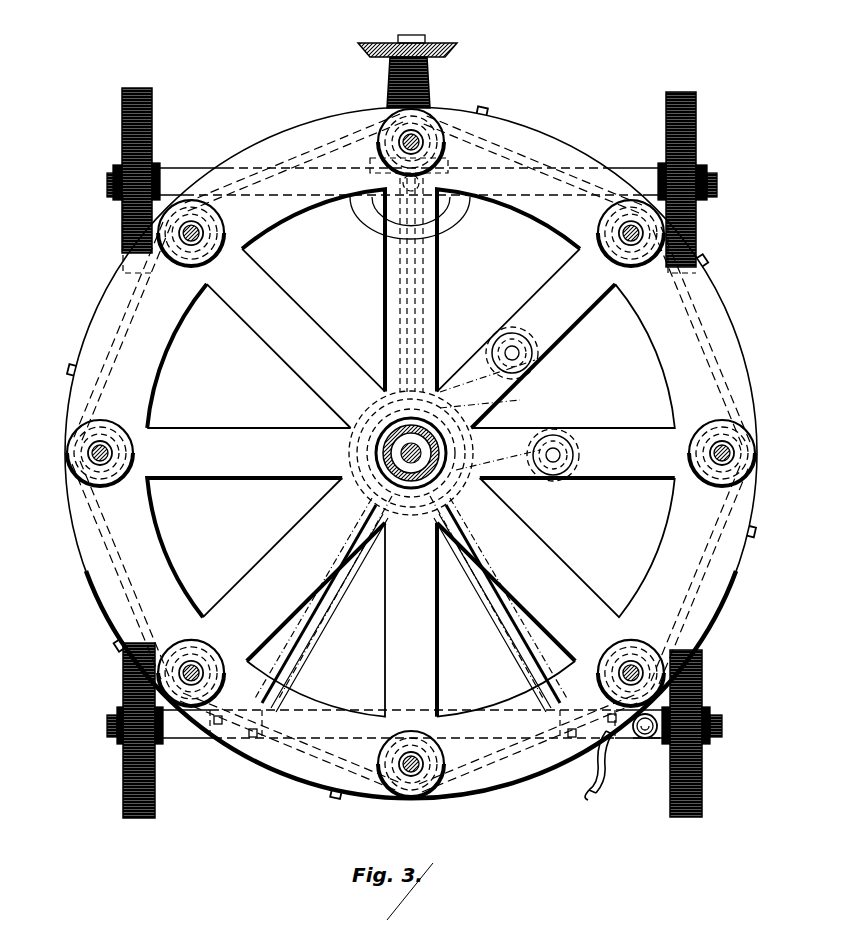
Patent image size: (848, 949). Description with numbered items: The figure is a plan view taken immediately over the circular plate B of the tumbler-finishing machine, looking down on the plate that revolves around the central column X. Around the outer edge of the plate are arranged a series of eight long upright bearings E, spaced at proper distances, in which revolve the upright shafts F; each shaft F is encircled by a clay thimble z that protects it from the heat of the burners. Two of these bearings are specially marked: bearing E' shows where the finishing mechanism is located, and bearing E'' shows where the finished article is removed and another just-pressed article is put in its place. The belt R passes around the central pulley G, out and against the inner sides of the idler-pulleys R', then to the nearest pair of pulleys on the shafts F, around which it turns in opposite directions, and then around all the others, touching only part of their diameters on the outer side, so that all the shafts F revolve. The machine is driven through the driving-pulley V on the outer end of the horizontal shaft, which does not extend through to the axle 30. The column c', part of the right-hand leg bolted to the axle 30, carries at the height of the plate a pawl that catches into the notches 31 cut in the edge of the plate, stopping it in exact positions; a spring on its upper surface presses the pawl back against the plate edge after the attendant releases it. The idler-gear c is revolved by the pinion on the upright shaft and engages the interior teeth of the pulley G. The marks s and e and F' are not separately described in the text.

The driving-pulley V is at (407, 63).
The upright bearings E is at (426, 393).
The bearing at finishing mechanism E' is at (430, 764).
The bearing at removal station E'' is at (676, 673).
The upright shafts F is at (411, 435).
The roller F' is at (610, 233).
The notches 31 is at (482, 112).
The axle 30 is at (648, 168).
The belt R is at (411, 453).
The idler-pulleys R' is at (532, 416).
The column X is at (393, 437).
The thimble z is at (400, 454).
The idler-gear c is at (611, 762).
The spring s is at (644, 736).
The column c' is at (650, 741).
The latch hook e is at (603, 764).